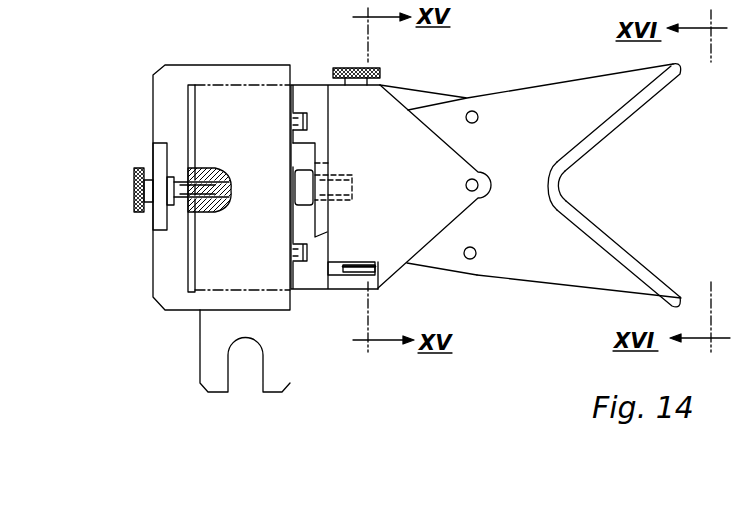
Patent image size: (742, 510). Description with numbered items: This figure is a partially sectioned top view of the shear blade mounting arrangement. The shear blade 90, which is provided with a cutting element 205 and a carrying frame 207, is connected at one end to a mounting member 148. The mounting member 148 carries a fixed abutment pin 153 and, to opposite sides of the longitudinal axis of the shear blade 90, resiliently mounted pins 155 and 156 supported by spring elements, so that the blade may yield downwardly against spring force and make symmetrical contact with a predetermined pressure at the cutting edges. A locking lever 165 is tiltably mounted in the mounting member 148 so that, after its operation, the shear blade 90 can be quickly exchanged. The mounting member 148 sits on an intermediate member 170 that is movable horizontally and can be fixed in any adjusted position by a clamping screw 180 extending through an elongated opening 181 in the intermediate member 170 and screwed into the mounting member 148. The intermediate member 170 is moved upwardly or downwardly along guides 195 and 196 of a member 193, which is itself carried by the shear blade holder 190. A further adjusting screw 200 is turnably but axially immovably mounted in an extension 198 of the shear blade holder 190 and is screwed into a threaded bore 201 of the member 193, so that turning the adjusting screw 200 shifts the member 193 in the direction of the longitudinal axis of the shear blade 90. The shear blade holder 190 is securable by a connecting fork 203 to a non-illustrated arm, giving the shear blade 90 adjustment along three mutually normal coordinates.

The shear blade 90 is at (617, 185).
The mounting member 148 is at (529, 194).
The fixed abutment pin 153 is at (483, 168).
The resiliently mounted pin 155 is at (478, 255).
The resiliently mounted pin 156 is at (480, 112).
The locking lever 165 is at (348, 273).
The intermediate member 170 is at (327, 237).
The clamping screw 180 is at (305, 192).
The elongated opening 181 is at (348, 202).
The shear blade holder 190 is at (166, 114).
The member 193 is at (226, 85).
The guide 195 is at (310, 258).
The guide 196 is at (310, 125).
The extension 198 is at (157, 222).
The adjusting screw 200 is at (134, 187).
The threaded bore 201 is at (231, 190).
The connecting fork 203 is at (210, 368).
The cutting element 205 is at (583, 205).
The carrying frame 207 is at (571, 308).